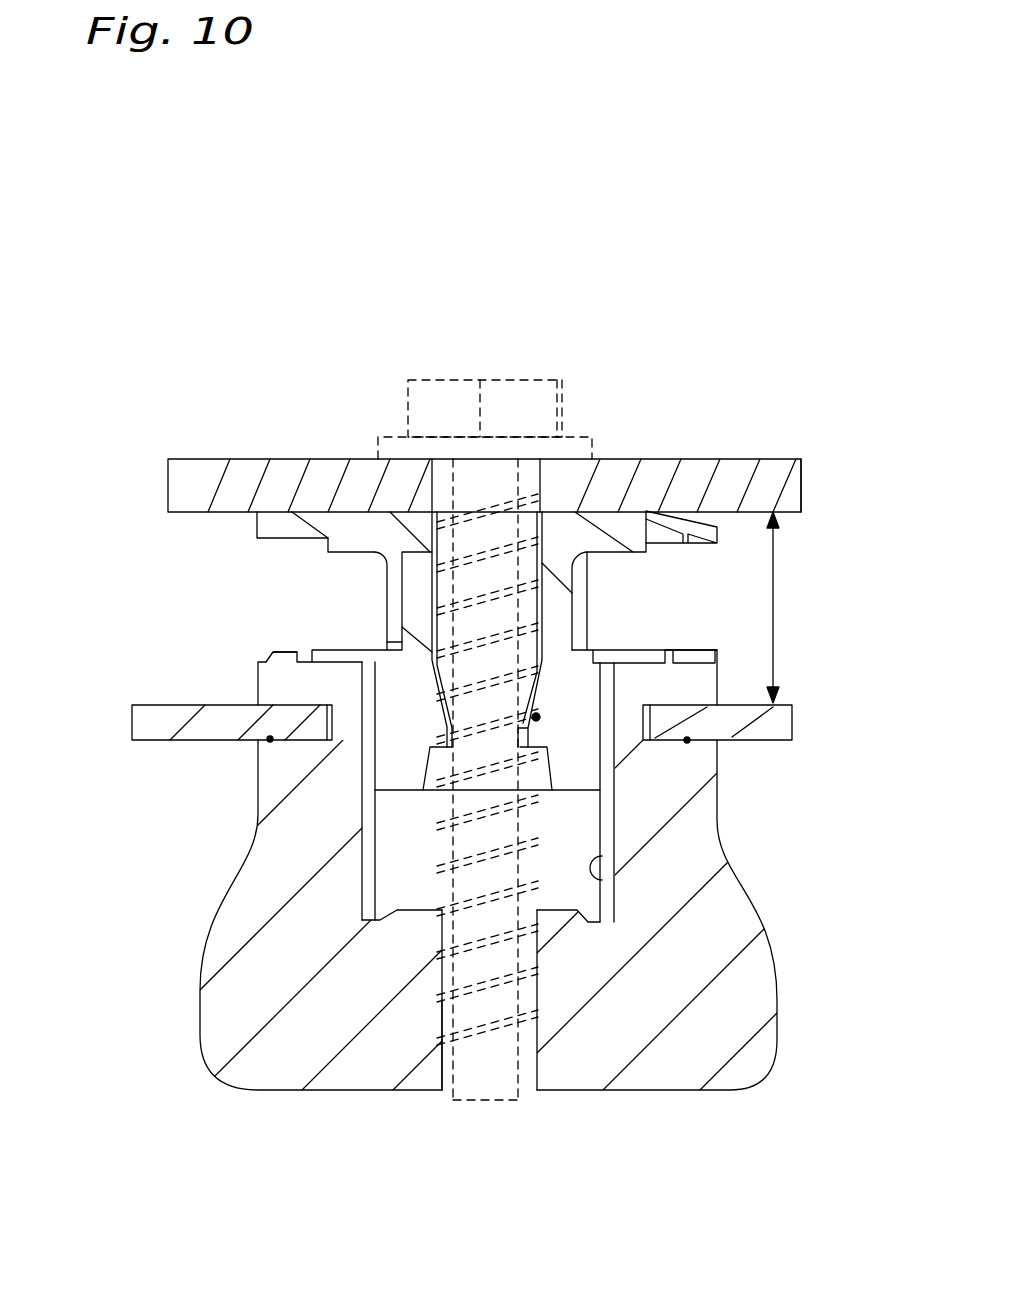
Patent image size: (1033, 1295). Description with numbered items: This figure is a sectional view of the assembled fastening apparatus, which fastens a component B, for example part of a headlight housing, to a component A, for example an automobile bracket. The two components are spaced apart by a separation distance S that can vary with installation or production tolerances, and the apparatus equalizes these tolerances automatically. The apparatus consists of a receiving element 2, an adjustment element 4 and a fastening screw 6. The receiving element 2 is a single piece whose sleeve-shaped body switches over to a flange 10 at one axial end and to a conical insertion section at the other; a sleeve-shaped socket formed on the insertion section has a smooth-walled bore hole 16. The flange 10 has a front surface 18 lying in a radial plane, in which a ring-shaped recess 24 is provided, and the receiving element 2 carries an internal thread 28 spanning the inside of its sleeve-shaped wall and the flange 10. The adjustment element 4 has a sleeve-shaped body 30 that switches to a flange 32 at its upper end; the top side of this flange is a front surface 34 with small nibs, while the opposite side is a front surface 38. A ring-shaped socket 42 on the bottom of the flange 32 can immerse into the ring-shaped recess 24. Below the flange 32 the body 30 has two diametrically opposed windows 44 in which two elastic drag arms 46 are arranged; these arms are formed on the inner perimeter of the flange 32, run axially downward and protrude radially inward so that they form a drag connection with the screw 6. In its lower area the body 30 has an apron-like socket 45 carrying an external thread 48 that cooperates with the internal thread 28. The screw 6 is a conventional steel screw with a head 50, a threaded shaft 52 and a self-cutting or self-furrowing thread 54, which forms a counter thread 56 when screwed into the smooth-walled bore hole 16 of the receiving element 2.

The receiving element 2 is at (306, 1037).
The adjustment element 4 is at (530, 426).
The fastening screw 6 is at (514, 739).
The flange 10 is at (612, 778).
The smooth-walled bore hole 16 is at (540, 992).
The front surface 18 is at (552, 754).
The ring-shaped recess 24 is at (277, 705).
The internal thread 28 is at (612, 878).
The sleeve-shaped body 30 is at (395, 692).
The flange 32 is at (576, 528).
The front surface 34 is at (713, 460).
The front surface 38 is at (280, 538).
The ring-shaped socket 42 is at (352, 552).
The windows 44 is at (573, 627).
The apron-like socket 45 is at (370, 790).
The elastic drag arms 46 is at (563, 565).
The external thread 48 is at (395, 765).
The head 50 is at (543, 400).
The threaded shaft 52 is at (492, 1085).
The self-cutting and/or self-furrowing thread 54 is at (538, 1006).
The counter thread 56 is at (438, 1042).
The component A is at (793, 726).
The component B is at (787, 470).
The separation distance S is at (783, 607).